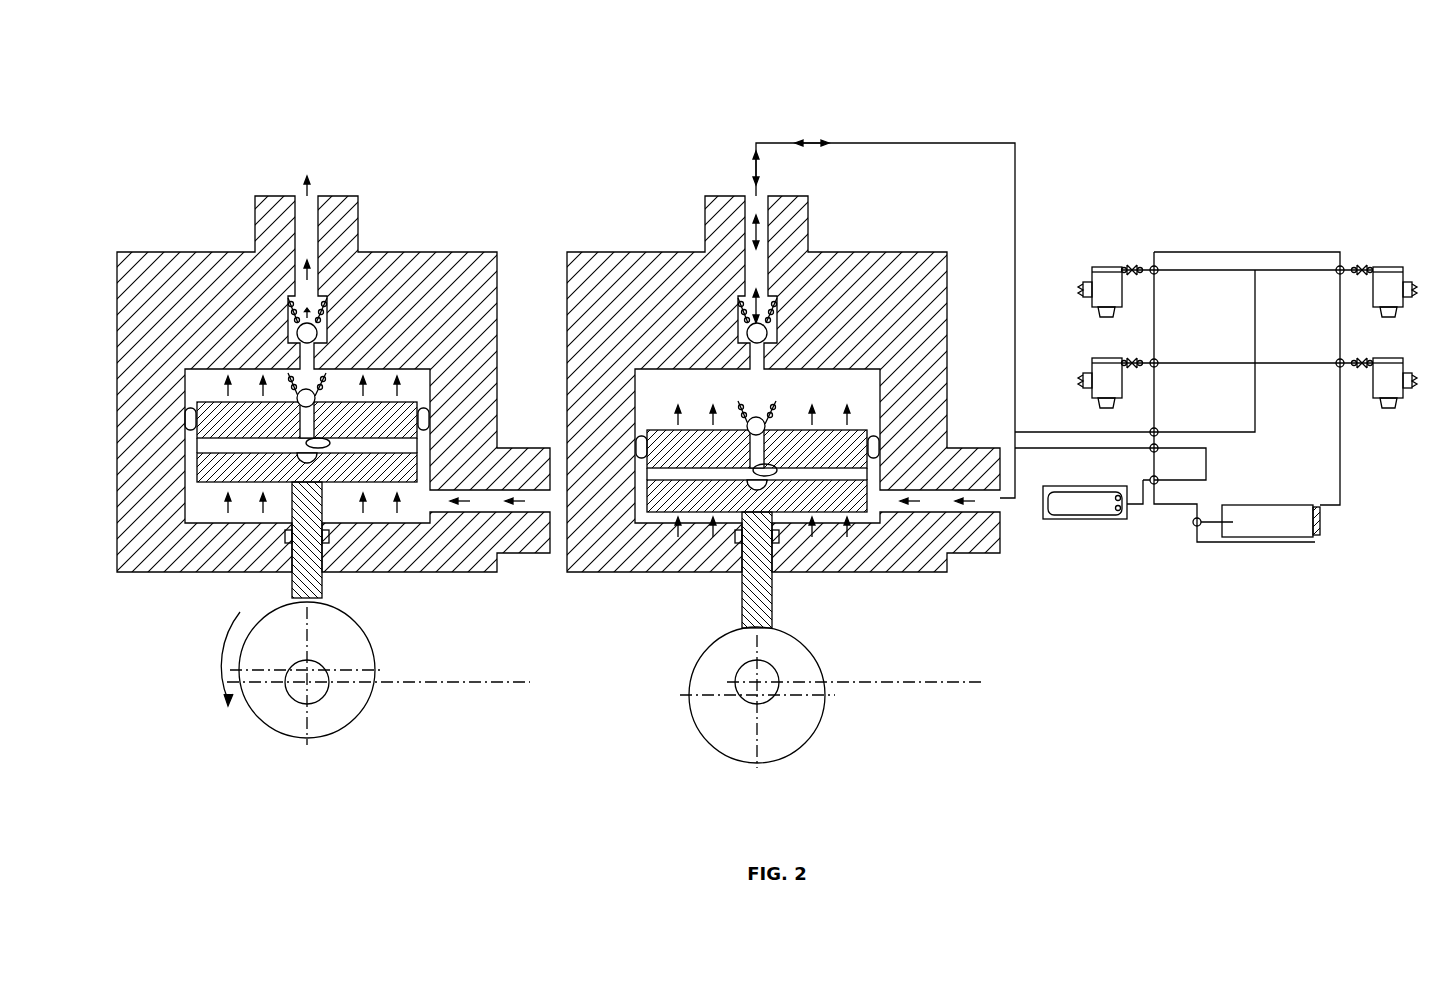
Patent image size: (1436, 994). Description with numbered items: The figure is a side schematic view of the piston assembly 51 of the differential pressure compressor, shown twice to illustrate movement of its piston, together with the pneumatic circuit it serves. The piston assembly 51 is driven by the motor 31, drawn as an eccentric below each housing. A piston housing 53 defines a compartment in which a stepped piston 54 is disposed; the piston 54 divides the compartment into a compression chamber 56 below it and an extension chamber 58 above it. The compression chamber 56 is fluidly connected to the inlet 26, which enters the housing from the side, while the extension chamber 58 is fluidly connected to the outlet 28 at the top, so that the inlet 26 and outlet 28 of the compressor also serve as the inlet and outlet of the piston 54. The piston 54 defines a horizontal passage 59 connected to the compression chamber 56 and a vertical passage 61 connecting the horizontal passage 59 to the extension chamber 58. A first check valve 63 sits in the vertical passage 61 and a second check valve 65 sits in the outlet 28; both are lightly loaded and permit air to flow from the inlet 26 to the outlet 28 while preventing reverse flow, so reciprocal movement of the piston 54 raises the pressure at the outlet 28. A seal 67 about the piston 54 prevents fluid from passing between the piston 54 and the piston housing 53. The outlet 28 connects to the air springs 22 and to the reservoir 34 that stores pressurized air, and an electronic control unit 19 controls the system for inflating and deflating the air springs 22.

The electronic control unit 19 is at (1263, 525).
The air springs 22 is at (1107, 263).
The inlet 26 is at (557, 500).
The outlet 28 is at (320, 195).
The motor 31 is at (270, 733).
The reservoir 34 is at (1083, 507).
The piston assembly 51 is at (537, 432).
The piston housing 53 is at (103, 313).
The stepped piston 54 is at (408, 400).
The compression chamber 56 is at (342, 503).
The extension chamber 58 is at (382, 377).
The horizontal passage 59 is at (227, 447).
The vertical passage 61 is at (305, 442).
The first check valve 63 is at (298, 392).
The second check valve 65 is at (315, 335).
The seal 67 is at (185, 418).